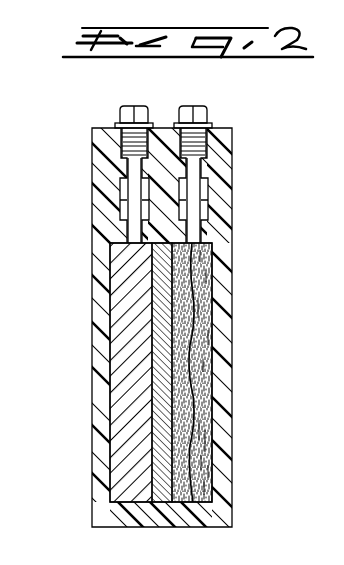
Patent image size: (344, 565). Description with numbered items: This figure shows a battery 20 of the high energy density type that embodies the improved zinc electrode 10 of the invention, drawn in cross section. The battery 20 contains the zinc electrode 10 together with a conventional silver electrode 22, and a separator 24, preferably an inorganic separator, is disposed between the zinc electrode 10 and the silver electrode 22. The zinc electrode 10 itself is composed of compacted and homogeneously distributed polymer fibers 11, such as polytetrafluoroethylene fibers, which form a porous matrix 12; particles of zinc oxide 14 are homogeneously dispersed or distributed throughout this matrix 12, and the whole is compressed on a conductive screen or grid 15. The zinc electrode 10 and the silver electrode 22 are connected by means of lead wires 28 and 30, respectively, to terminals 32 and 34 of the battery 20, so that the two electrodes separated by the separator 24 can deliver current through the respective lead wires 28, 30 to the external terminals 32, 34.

The zinc electrode 10 is at (232, 372).
The polymer fibers 11 is at (207, 487).
The porous matrix 12 is at (210, 392).
The particles of zinc oxide 14 is at (212, 458).
The conductive screen or grid 15 is at (203, 310).
The battery 20 is at (257, 285).
The silver electrode 22 is at (118, 312).
The separator 24 is at (155, 351).
The lead wire 28 is at (200, 205).
The lead wire 30 is at (118, 205).
The terminal 32 is at (207, 112).
The terminal 34 is at (120, 109).